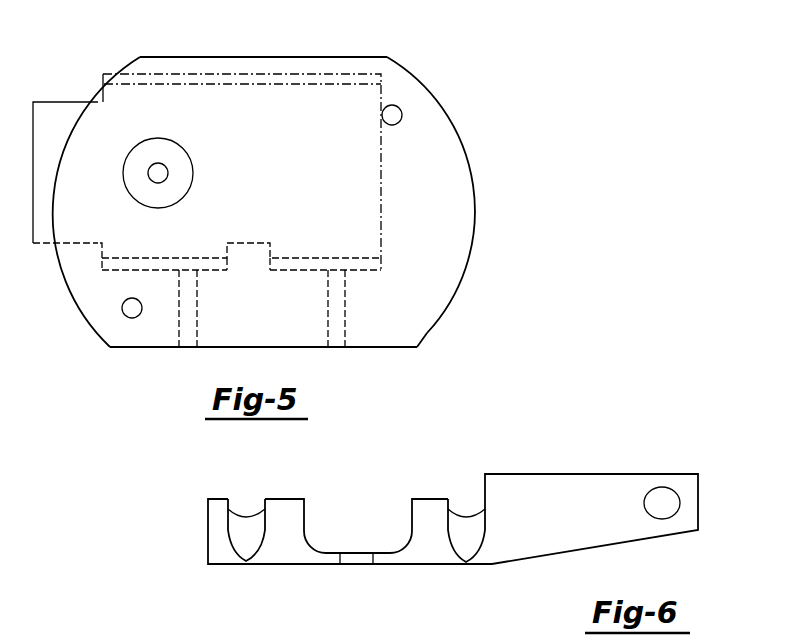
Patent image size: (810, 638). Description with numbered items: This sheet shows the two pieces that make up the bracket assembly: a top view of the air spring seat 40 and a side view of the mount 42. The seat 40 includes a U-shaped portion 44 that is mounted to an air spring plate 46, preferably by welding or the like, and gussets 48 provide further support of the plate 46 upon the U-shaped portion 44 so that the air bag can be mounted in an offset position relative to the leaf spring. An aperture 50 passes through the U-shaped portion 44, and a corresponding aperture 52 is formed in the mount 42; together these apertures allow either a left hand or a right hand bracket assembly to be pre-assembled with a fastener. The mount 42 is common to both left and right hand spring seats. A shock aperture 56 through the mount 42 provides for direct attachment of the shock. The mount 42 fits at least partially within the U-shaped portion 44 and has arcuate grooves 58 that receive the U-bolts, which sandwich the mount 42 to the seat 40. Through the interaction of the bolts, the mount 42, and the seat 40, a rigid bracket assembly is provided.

In FIG. 5, the air spring seat 40 is at (224, 34).
In FIG. 6, the mount 42 is at (720, 463).
In FIG. 5, the U-shaped portion 44 is at (285, 77).
In FIG. 5, the air spring plate 46 is at (455, 173).
In FIG. 5, the gussets 48 is at (197, 332).
In FIG. 5, the aperture 50 is at (159, 172).
In FIG. 6, the aperture 52 is at (353, 558).
In FIG. 6, the shock aperture 56 is at (662, 521).
In FIG. 6, the arcuate grooves 58 is at (242, 511).